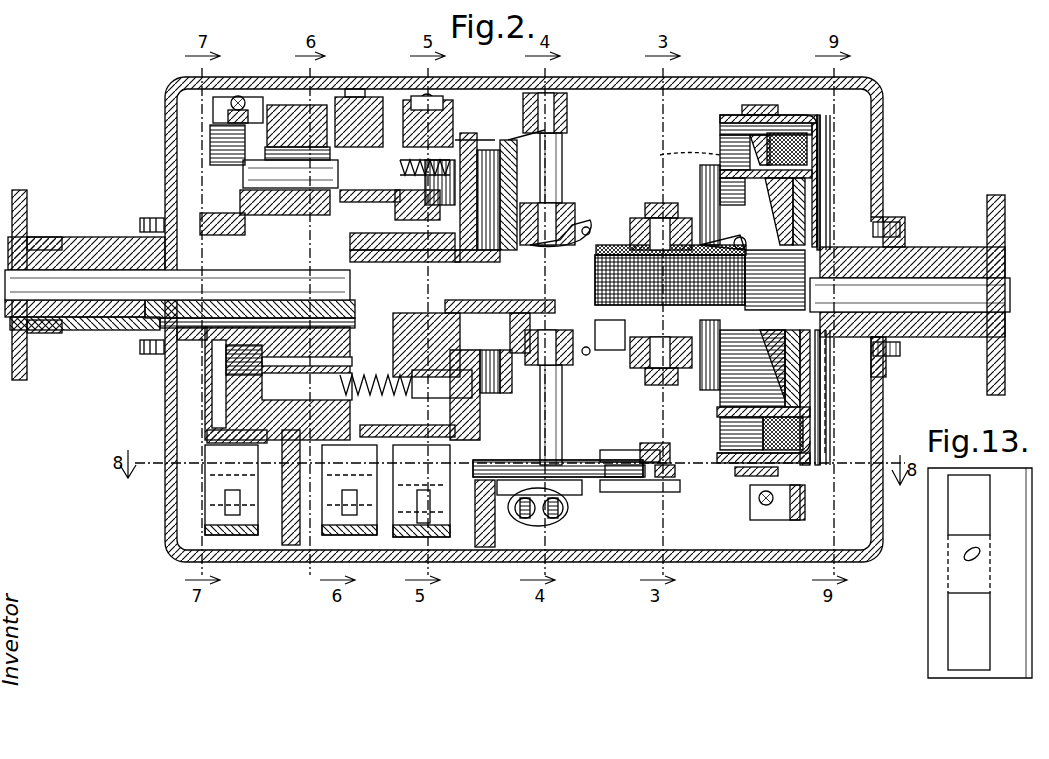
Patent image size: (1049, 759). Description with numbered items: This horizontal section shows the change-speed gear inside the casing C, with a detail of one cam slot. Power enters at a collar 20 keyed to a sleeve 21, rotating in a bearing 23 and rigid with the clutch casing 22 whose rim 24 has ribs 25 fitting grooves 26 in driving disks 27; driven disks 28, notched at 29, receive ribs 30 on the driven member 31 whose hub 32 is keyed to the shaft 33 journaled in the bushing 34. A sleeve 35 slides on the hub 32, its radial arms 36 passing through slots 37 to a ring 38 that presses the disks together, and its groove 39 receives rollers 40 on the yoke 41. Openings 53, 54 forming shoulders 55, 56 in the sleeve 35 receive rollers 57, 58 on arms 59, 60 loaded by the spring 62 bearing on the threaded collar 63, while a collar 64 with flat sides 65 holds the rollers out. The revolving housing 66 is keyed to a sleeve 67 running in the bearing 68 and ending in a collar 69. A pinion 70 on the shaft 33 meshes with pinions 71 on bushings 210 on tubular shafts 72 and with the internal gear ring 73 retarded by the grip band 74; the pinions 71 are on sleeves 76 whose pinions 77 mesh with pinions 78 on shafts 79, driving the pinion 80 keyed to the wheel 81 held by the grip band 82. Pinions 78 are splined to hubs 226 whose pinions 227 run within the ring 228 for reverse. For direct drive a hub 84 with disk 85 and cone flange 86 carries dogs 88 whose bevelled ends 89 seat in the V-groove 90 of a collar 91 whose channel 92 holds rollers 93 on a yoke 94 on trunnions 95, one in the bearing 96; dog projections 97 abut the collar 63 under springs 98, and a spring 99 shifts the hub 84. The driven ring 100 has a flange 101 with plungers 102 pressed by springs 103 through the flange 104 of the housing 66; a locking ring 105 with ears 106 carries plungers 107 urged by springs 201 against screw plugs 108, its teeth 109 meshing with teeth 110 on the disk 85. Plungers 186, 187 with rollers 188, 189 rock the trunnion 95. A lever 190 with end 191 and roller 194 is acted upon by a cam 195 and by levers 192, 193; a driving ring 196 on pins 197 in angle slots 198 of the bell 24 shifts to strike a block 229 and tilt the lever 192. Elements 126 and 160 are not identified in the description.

In FIG. 2, the casing C is at (622, 82).
In FIG. 2, the collar 20 is at (1005, 235).
In FIG. 2, the sleeve 21 is at (905, 245).
In FIG. 2, the outer casing 22 is at (830, 140).
In FIG. 2, the bearing 23 is at (910, 335).
In FIG. 2, the rim portion 24 is at (720, 118).
In FIG. 13, the rim portion 24 is at (930, 620).
In FIG. 2, the ribs 25 is at (722, 140).
In FIG. 2, the grooves 26 is at (788, 127).
In FIG. 2, the driving disks 27 is at (817, 128).
In FIG. 2, the driven disks 28 is at (812, 428).
In FIG. 2, the notches 29 is at (830, 165).
In FIG. 2, the ribs 30 is at (700, 160).
In FIG. 2, the cylindrical driven member 31 is at (712, 180).
In FIG. 2, the hub 32 is at (775, 280).
In FIG. 2, the shaft 33 is at (180, 285).
In FIG. 2, the bearing-sleeve 34 is at (910, 292).
In FIG. 2, the sleeve 35 is at (690, 240).
In FIG. 2, the radial arms 36 is at (758, 292).
In FIG. 2, the slots 37 is at (665, 184).
In FIG. 2, the ring 38 is at (740, 160).
In FIG. 2, the circumferential groove 39 is at (640, 240).
In FIG. 2, the rollers 40 is at (650, 225).
In FIG. 2, the yoke 41 is at (650, 203).
In FIG. 2, the opening 53 is at (728, 240).
In FIG. 2, the opening 54 is at (718, 340).
In FIG. 2, the shoulder 55 is at (762, 221).
In FIG. 2, the shoulder 56 is at (765, 397).
In FIG. 2, the roller 57 is at (760, 189).
In FIG. 2, the roller 58 is at (735, 384).
In FIG. 2, the arm 59 is at (670, 280).
In FIG. 2, the arm 60 is at (710, 289).
In FIG. 2, the spring 62 is at (606, 337).
In FIG. 2, the collar 63 is at (597, 361).
In FIG. 2, the collar 64 is at (745, 290).
In FIG. 2, the flat sides 65 is at (755, 289).
In FIG. 2, the revolving housing 66 is at (240, 195).
In FIG. 2, the sleeve 67 is at (140, 335).
In FIG. 2, the bearing 68 is at (100, 320).
In FIG. 2, the collar 69 is at (27, 340).
In FIG. 2, the pinion 70 is at (445, 195).
In FIG. 2, the pinions 71 is at (428, 437).
In FIG. 2, the tubular shafts 72 is at (307, 420).
In FIG. 2, the internal gear ring 73 is at (440, 100).
In FIG. 2, the friction grip band 74 is at (420, 96).
In FIG. 2, the sleeves 76 is at (345, 445).
In FIG. 2, the pinions 77 is at (280, 440).
In FIG. 2, the pinions 78 is at (283, 105).
In FIG. 2, the shafts 79 is at (260, 168).
In FIG. 2, the pinion 80 is at (230, 345).
In FIG. 2, the wheel 81 is at (210, 143).
In FIG. 2, the grip band 82 is at (213, 115).
In FIG. 2, the hub 84 is at (560, 225).
In FIG. 2, the disk 85 is at (515, 160).
In FIG. 2, the cone-shaped flange 86 is at (506, 140).
In FIG. 2, the pivoted dogs 88 is at (550, 298).
In FIG. 2, the bevelled end 89 is at (500, 255).
In FIG. 2, the annular V-groove 90 is at (582, 240).
In FIG. 2, the collar 91 is at (558, 228).
In FIG. 2, the annular channel 92 is at (565, 210).
In FIG. 2, the rollers 93 is at (556, 200).
In FIG. 2, the yoke 94 is at (556, 395).
In FIG. 2, the trunnions 95 is at (560, 180).
In FIG. 2, the bearing 96 is at (565, 486).
In FIG. 2, the projection 97 is at (586, 235).
In FIG. 2, the coiled springs 98 is at (520, 272).
In FIG. 2, the spring 99 is at (426, 320).
In FIG. 2, the ring 100 is at (492, 130).
In FIG. 2, the annular flange 101 is at (470, 193).
In FIG. 2, the plungers 102 is at (417, 207).
In FIG. 2, the springs 103 is at (430, 175).
In FIG. 2, the flange 104 is at (470, 133).
In FIG. 2, the locking ring 105 is at (405, 266).
In FIG. 2, the ears 106 is at (480, 445).
In FIG. 2, the plungers 107 is at (406, 384).
In FIG. 2, the screw plugs 108 is at (300, 380).
In FIG. 2, the teeth 109 is at (500, 301).
In FIG. 2, the teeth 110 is at (490, 160).
In FIG. 2, the line 126 is at (843, 392).
In FIG. 2, the block 160 is at (405, 537).
In FIG. 2, the plunger 186 is at (510, 530).
In FIG. 2, the plunger 187 is at (568, 508).
In FIG. 2, the roller 188 is at (525, 518).
In FIG. 2, the roller 189 is at (553, 518).
In FIG. 2, the lever 190 is at (660, 478).
In FIG. 2, the end 191 is at (668, 478).
In FIG. 2, the latch lever 192 is at (680, 492).
In FIG. 2, the lever 193 is at (558, 443).
In FIG. 2, the roller 194 is at (620, 450).
In FIG. 2, the cam 195 is at (655, 443).
In FIG. 2, the driving ring 196 is at (752, 105).
In FIG. 13, the driving ring 196 is at (950, 642).
In FIG. 2, the pins 197 is at (620, 478).
In FIG. 13, the pins 197 is at (962, 560).
In FIG. 13, the angle slots 198 is at (980, 552).
In FIG. 2, the springs 201 is at (415, 440).
In FIG. 2, the bushings 210 is at (265, 407).
In FIG. 2, the central sleeves 226 is at (297, 150).
In FIG. 2, the pinion 227 is at (340, 200).
In FIG. 2, the internal gear ring 228 is at (356, 97).
In FIG. 2, the block 229 is at (735, 530).